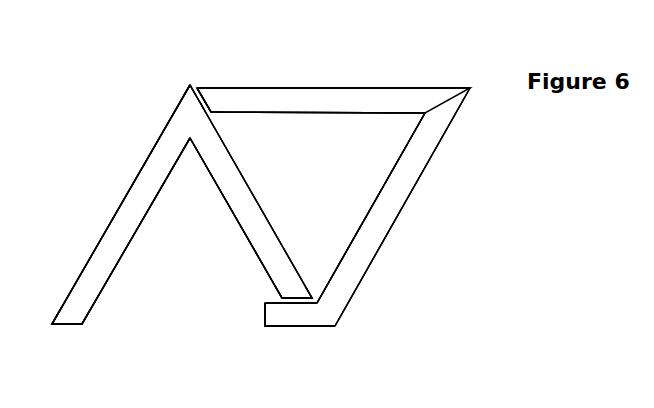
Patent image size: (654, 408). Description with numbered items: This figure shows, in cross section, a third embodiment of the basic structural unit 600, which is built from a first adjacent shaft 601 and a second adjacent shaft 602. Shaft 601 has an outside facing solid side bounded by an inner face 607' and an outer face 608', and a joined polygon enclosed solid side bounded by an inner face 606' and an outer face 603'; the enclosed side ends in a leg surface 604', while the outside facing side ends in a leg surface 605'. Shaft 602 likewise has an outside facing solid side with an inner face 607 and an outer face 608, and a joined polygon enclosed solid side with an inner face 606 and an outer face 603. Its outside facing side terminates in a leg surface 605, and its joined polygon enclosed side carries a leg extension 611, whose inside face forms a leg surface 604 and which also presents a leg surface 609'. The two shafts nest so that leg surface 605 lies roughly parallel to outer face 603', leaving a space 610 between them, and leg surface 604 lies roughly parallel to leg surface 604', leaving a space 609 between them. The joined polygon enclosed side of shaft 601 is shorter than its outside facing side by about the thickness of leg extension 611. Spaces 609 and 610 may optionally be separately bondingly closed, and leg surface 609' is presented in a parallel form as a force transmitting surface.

The basic structural unit 600 is at (471, 149).
The first adjacent shaft 601 is at (128, 140).
The second adjacent shaft 602 is at (390, 64).
The outer face of a joined polygon enclosed solid side 603 is at (416, 207).
The outer face of a joined polygon enclosed solid side 603' is at (262, 191).
The leg surface of an inside face of leg extension 604 is at (334, 333).
The leg surface of a joined polygon enclosed solid side 604' is at (359, 272).
The leg surface of an outside facing solid side 605 is at (224, 71).
The leg surface of an outside facing solid side 605' is at (59, 351).
The inner face of a joined polygon enclosed solid side 606 is at (371, 208).
The inner face of a joined polygon enclosed solid side 606' is at (223, 218).
The inner face of an outside facing solid side 607 is at (318, 136).
The inner face of an outside facing solid side 607' is at (136, 231).
The outer face of an outside facing solid side 608 is at (333, 62).
The outer face of an outside facing solid side 608' is at (106, 204).
The space 609 is at (224, 349).
The leg surface of leg extension 609' is at (300, 363).
The space 610 is at (181, 75).
The leg extension 611 is at (267, 309).